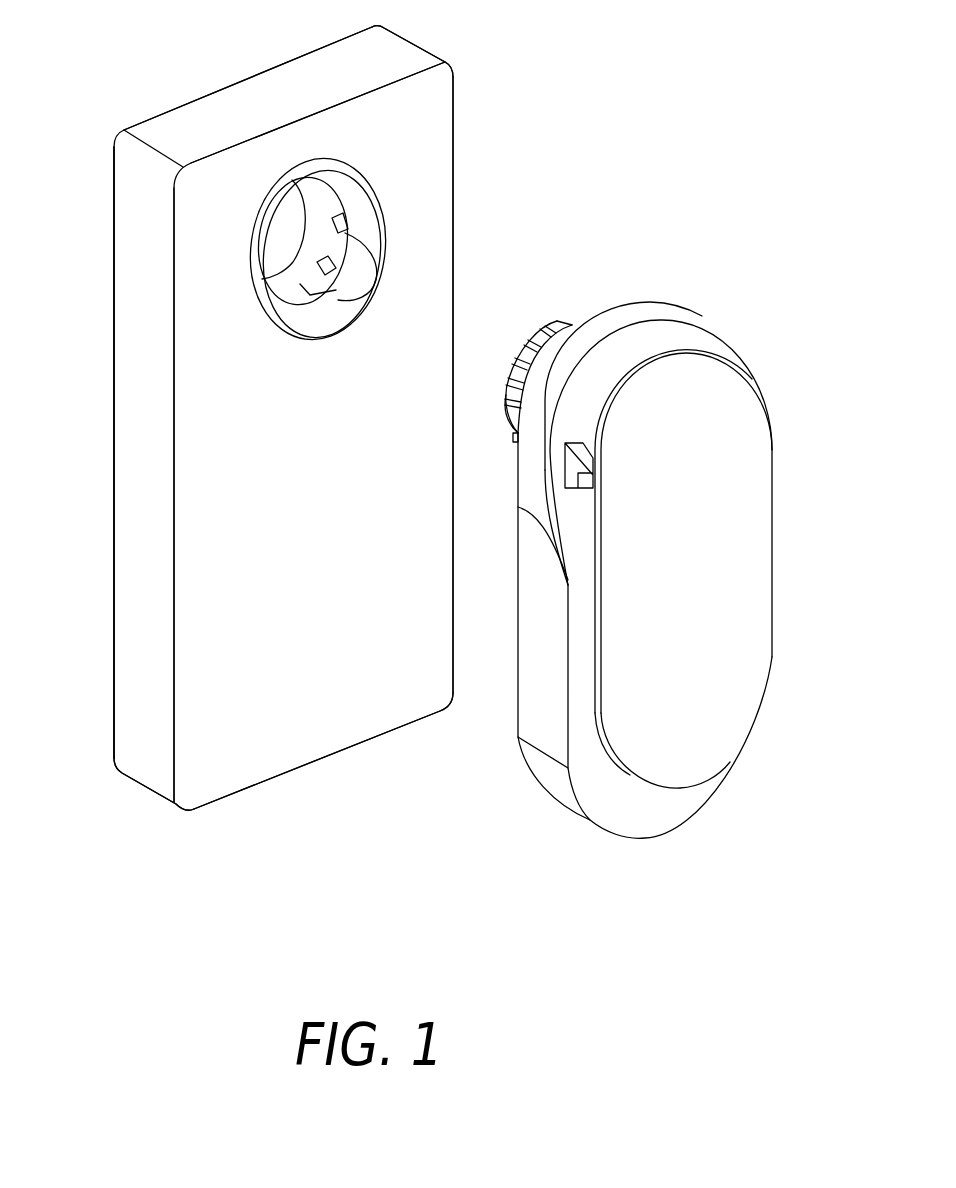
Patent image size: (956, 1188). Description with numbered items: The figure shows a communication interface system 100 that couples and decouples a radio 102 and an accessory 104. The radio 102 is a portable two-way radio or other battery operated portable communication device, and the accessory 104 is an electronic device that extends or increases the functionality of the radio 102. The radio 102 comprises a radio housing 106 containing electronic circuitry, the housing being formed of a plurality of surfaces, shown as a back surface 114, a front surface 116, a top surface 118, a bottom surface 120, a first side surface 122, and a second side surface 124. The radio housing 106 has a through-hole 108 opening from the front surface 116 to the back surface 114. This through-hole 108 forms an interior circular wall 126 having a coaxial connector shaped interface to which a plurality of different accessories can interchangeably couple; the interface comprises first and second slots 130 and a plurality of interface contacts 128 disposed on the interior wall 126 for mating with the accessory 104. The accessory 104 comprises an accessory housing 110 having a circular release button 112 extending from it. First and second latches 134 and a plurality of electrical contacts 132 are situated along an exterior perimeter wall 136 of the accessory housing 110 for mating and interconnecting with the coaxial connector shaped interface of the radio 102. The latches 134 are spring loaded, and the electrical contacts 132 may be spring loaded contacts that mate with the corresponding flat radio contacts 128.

The communication interface system 100 is at (754, 940).
The radio 102 is at (453, 172).
The accessory 104 is at (738, 355).
The radio housing 106 is at (455, 73).
The through-hole 108 is at (282, 220).
The accessory housing 110 is at (698, 323).
The circular release button 112 is at (563, 320).
The back surface 114 is at (308, 735).
The front surface 116 is at (114, 620).
The top surface 118 is at (170, 125).
The bottom surface 120 is at (215, 805).
The first side surface 122 is at (123, 458).
The second side surface 124 is at (455, 280).
The interior circular wall 126 is at (318, 222).
The interface contacts 128 is at (365, 268).
The first and second slots 130 is at (295, 295).
The electrical contacts 132 is at (518, 393).
The first and second latches 134 is at (540, 337).
The exterior perimeter wall 136 is at (577, 327).